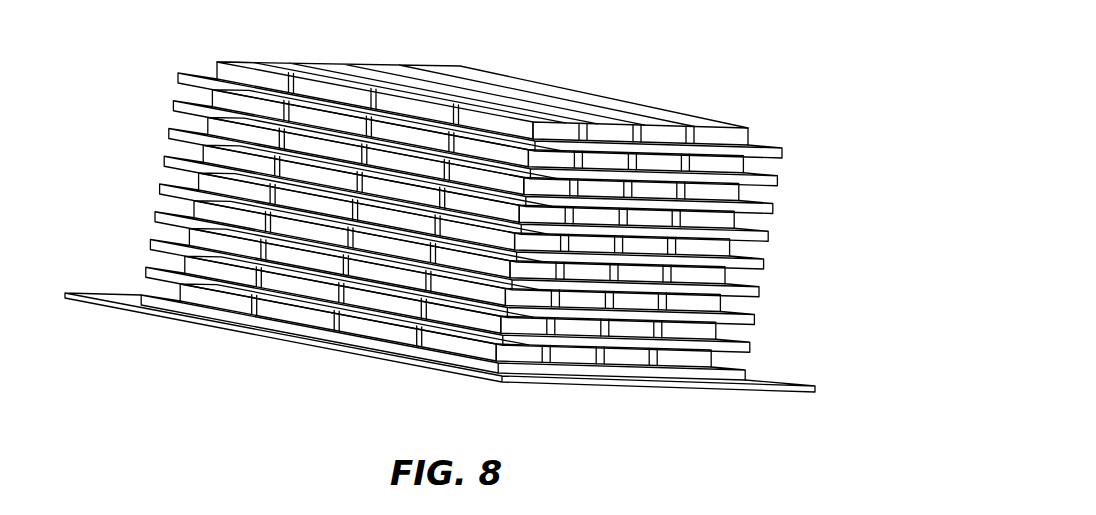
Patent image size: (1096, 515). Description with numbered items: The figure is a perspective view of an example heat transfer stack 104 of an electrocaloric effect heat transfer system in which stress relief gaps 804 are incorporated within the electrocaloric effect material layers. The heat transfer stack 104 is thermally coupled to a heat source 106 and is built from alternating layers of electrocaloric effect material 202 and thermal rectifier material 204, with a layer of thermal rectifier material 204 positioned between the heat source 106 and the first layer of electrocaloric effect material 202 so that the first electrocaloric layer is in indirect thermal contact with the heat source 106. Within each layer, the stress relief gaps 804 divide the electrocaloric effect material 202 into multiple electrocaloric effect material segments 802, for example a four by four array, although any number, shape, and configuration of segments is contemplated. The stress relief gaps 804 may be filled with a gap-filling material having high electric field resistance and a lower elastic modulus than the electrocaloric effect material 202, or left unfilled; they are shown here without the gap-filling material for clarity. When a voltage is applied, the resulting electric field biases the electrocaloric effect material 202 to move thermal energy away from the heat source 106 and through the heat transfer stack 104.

The heat transfer stack 104 is at (745, 51).
The heat source 106 is at (128, 310).
The electrocaloric effect material 202 is at (737, 130).
The thermal rectifier material 204 is at (778, 153).
The electrocaloric effect material segments 802 is at (527, 88).
The stress relief gaps 804 is at (652, 112).